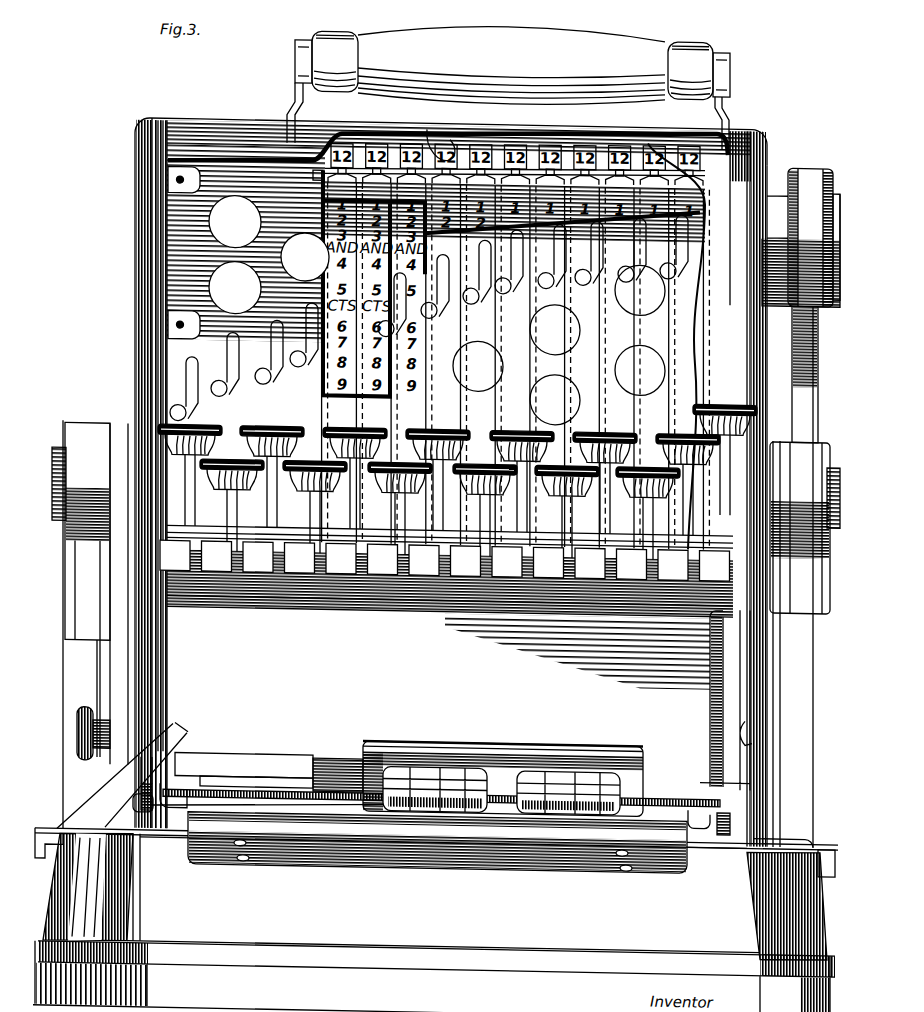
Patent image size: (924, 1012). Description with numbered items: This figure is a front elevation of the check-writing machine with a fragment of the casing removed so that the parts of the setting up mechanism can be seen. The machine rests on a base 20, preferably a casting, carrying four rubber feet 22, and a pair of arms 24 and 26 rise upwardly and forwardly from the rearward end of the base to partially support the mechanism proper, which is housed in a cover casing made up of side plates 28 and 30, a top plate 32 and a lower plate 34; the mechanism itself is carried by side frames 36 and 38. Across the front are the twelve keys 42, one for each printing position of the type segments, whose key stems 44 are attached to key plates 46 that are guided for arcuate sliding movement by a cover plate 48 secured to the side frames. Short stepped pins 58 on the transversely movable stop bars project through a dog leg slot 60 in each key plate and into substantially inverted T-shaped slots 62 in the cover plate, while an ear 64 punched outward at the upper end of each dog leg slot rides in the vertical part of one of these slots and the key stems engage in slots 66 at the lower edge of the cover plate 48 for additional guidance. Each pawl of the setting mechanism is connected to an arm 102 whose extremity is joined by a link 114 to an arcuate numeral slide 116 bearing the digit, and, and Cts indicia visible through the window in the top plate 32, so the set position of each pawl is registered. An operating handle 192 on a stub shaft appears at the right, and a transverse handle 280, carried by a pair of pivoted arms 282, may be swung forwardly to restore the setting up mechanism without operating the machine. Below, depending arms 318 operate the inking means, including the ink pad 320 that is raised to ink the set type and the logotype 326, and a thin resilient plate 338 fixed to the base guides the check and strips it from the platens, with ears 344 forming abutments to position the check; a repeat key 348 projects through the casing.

The base 20 is at (303, 950).
The rubber feet 22 is at (117, 993).
The arm 24 is at (783, 577).
The arm 26 is at (64, 701).
The side plate 28 is at (764, 140).
The side plate 30 is at (140, 146).
The top plate 32 is at (212, 123).
The lower plate 34 is at (460, 745).
The side frame 36 is at (722, 805).
The side frame 38 is at (141, 815).
The keys 42 is at (170, 431).
The key stems 44 is at (186, 514).
The key plates 46 is at (222, 230).
The cover plate 48 is at (175, 305).
The pin 58 is at (258, 395).
The dog leg slot 60 is at (455, 310).
The inverted T-shaped slots 62 is at (190, 374).
The ear 64 is at (275, 328).
The slots 66 is at (287, 565).
The arm 102 is at (390, 137).
The link 114 is at (427, 130).
The arcuate numeral slide 116 is at (648, 140).
The operating handle 192 is at (800, 408).
The handle 280 is at (492, 36).
The arms 282 is at (292, 115).
The depending arms 318 is at (147, 812).
The ink pad 320 is at (262, 797).
The logotype 326 is at (230, 787).
The thin resilient plate 338 is at (345, 855).
The ears 344 is at (163, 765).
The repeat key 348 is at (700, 406).